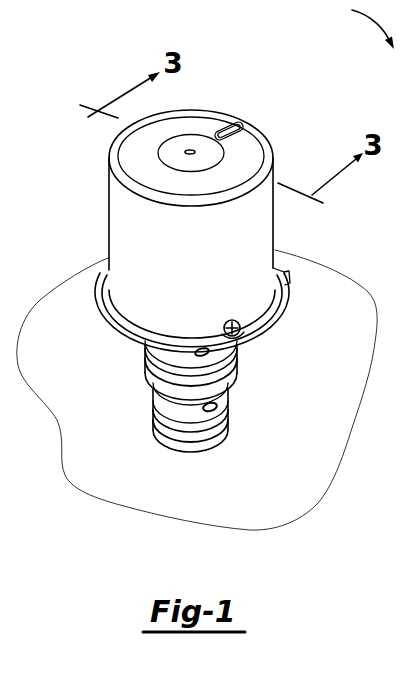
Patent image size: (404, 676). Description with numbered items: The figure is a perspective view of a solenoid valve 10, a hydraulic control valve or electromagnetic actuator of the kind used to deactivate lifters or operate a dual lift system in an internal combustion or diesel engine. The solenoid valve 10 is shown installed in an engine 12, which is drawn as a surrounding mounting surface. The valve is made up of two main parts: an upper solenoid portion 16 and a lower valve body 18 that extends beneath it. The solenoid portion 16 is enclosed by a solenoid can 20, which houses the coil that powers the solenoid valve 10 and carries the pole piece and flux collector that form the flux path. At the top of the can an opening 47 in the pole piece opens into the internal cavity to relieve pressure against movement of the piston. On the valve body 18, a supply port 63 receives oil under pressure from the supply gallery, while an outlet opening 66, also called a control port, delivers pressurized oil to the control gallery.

The solenoid valve 10 is at (262, 104).
The engine 12 is at (52, 328).
The solenoid portion 16 is at (122, 240).
The valve body 18 is at (160, 362).
The solenoid can 20 is at (247, 288).
The opening 47 is at (190, 150).
The supply port 63 is at (203, 352).
The outlet opening 66 is at (216, 408).